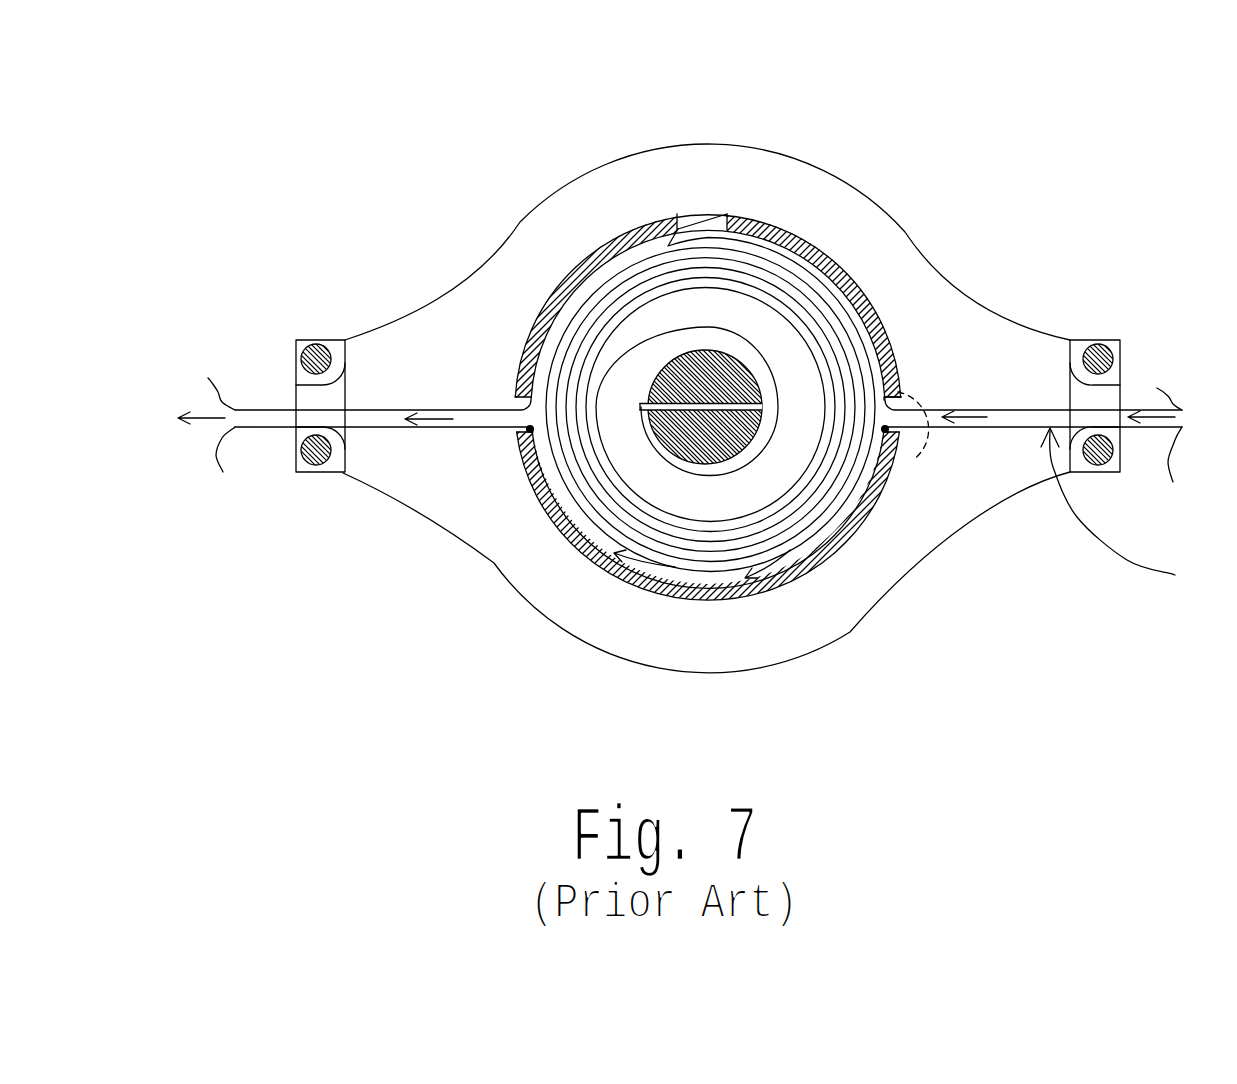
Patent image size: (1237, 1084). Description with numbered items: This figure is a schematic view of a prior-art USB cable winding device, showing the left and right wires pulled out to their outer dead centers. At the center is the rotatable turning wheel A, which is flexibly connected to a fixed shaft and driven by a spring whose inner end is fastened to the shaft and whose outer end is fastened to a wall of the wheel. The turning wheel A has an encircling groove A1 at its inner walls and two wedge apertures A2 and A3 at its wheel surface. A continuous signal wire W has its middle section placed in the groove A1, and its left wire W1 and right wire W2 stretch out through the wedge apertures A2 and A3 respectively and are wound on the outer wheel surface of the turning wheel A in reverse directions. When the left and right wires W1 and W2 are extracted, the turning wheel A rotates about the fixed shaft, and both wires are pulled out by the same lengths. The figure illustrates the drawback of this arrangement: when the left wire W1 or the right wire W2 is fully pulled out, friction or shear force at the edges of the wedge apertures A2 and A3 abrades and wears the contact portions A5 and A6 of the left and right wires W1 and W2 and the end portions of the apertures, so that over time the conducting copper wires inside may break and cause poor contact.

The rotatable turning wheel A is at (813, 250).
The encircling groove A1 is at (728, 580).
The wedge aperture A2 is at (520, 392).
The wedge aperture A3 is at (890, 393).
The contact portion A5 is at (522, 437).
The contact portion A6 is at (889, 431).
The continuous signal wire W is at (1123, 513).
The left wire W1 is at (379, 420).
The right wire W2 is at (1003, 410).